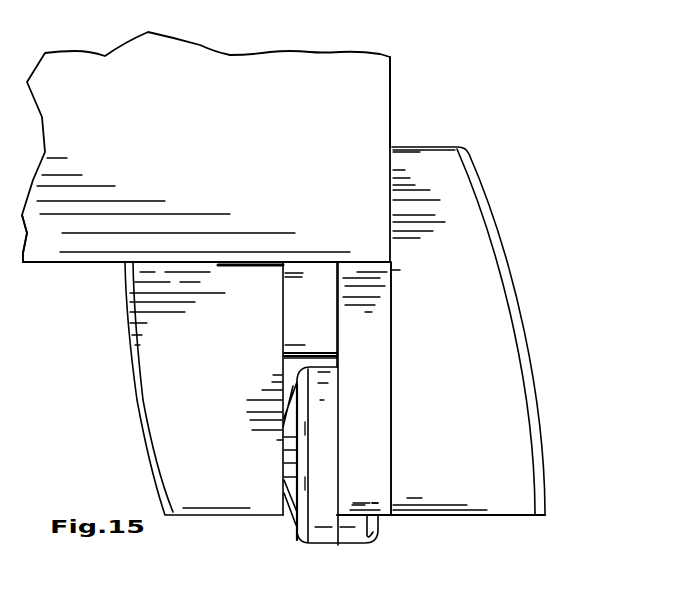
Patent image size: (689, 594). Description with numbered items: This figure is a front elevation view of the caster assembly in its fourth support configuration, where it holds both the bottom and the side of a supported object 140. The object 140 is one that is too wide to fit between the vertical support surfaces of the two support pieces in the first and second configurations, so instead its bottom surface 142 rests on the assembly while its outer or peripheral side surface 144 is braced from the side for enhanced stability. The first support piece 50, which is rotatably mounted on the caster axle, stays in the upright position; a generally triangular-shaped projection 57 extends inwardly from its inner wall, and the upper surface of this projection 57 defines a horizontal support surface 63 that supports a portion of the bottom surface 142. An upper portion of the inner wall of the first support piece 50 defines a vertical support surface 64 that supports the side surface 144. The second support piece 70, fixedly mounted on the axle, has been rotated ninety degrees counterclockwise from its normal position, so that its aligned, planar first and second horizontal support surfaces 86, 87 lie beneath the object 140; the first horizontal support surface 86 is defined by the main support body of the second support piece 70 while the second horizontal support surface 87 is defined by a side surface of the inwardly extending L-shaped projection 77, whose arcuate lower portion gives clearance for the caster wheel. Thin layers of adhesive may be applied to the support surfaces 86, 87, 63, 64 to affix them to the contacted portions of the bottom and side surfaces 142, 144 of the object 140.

The object 140 is at (330, 118).
The bottom surface 142 is at (78, 262).
The side surface 144 is at (390, 120).
The first support piece 50 is at (537, 290).
The triangular-shaped projection 57 is at (378, 393).
The horizontal support surface 63 is at (363, 262).
The vertical support surface 64 is at (392, 217).
The second support piece 70 is at (130, 403).
The L-shaped projection 77 is at (315, 317).
The first horizontal support surface 86 is at (232, 263).
The second horizontal support surface 87 is at (308, 262).